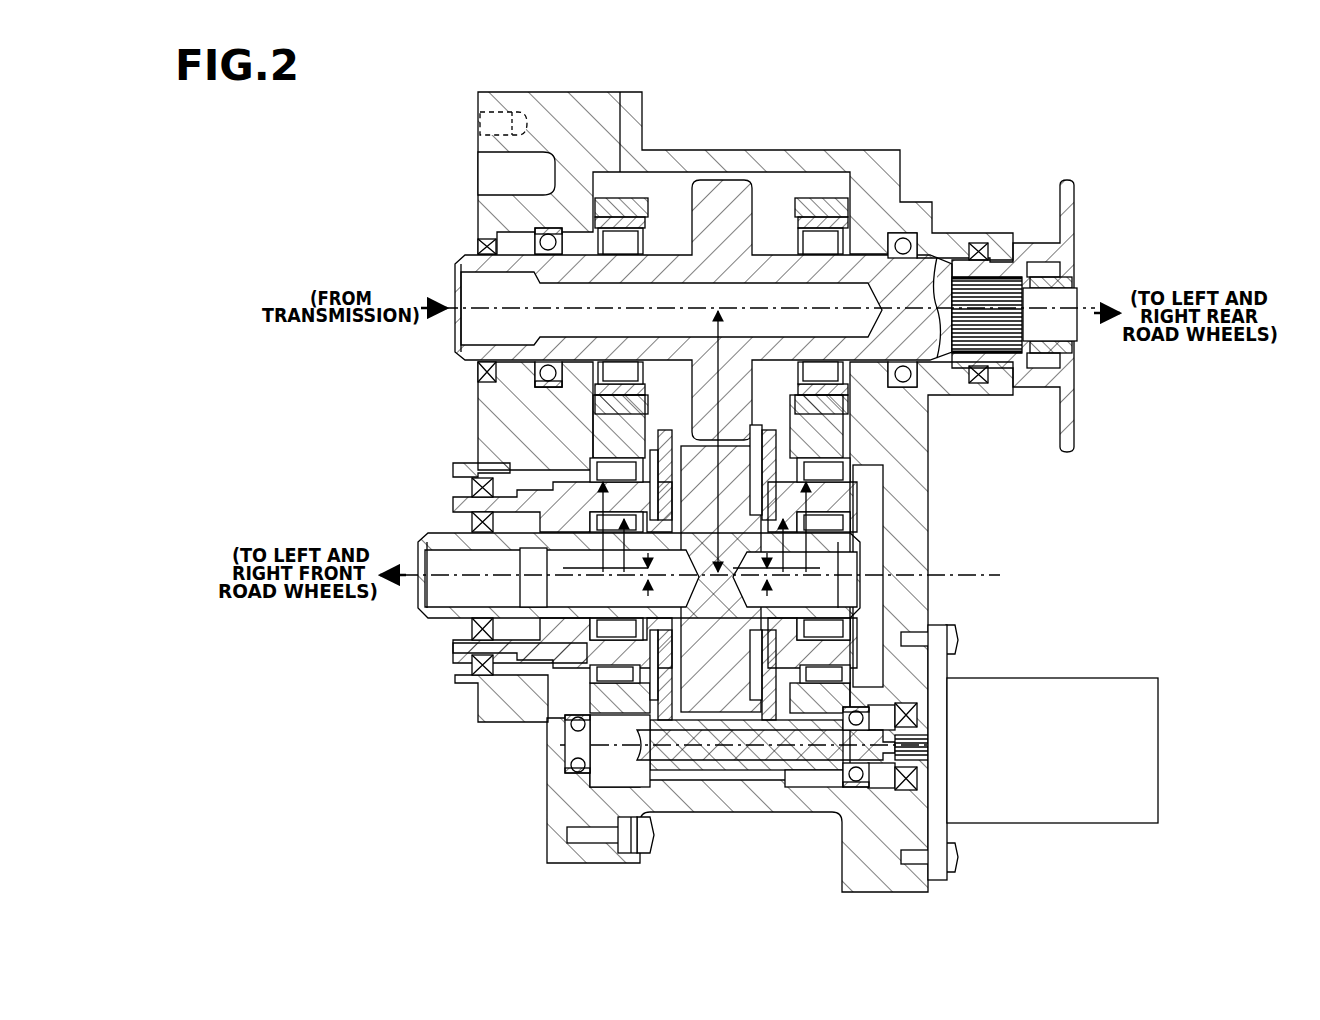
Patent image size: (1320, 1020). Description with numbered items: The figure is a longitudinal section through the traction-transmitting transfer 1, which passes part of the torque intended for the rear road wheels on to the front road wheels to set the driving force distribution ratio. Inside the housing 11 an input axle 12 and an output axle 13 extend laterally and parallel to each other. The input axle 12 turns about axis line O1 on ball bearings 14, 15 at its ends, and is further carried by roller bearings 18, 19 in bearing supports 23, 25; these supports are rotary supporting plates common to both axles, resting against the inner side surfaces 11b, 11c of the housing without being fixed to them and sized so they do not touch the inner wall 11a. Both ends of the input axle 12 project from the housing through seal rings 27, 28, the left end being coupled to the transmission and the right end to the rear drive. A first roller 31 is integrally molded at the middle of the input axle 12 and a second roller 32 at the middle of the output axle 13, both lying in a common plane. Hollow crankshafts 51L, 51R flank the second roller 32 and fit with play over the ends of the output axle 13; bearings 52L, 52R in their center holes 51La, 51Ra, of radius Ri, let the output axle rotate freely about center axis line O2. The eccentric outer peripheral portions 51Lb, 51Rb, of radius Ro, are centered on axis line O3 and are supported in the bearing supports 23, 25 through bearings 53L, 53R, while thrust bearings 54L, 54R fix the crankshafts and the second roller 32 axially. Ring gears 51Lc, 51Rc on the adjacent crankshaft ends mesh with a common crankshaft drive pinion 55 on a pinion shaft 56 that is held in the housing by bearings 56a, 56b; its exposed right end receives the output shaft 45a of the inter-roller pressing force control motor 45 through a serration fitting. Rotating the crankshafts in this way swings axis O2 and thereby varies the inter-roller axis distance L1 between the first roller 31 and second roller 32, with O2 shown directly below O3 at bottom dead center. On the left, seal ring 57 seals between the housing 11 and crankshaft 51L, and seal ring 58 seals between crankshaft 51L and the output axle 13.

The traction-transmitting transfer 1 is at (808, 146).
The housing 11 is at (595, 102).
The inner wall 11a is at (780, 192).
The inner side surface 11b is at (598, 182).
The inner side surface 11c is at (855, 180).
The input axle 12 is at (669, 252).
The output axle 13 is at (442, 615).
The ball bearing 14 is at (538, 236).
The ball bearing 15 is at (906, 236).
The roller bearing 18 is at (608, 245).
The roller bearing 19 is at (822, 245).
The bearing support 23 is at (633, 196).
The bearing support 25 is at (818, 197).
The seal ring 27 is at (478, 247).
The seal ring 28 is at (996, 258).
The first roller 31 is at (727, 170).
The second roller 32 is at (712, 716).
The inter-roller pressing force control motor 45 is at (1090, 678).
The output shaft 45a is at (930, 760).
The crankshaft 51L is at (580, 660).
The center hole 51La is at (547, 646).
The eccentric outer peripheral portion 51Lb is at (590, 462).
The ring gear 51Lc is at (678, 790).
The crankshaft 51R is at (858, 520).
The center hole 51Ra is at (858, 538).
The eccentric outer peripheral portion 51Rb is at (835, 455).
The ring gear 51Rc is at (773, 722).
The bearing 52L is at (597, 677).
The bearing 52R is at (830, 560).
The bearing 53L is at (590, 747).
The bearing 53R is at (872, 672).
The thrust bearing 54L is at (678, 512).
The thrust bearing 54R is at (756, 512).
The crankshaft drive pinion 55 is at (742, 790).
The pinion shaft 56 is at (822, 782).
The bearing 56a is at (578, 778).
The bearing 56b is at (857, 795).
The seal ring 57 is at (472, 486).
The seal ring 58 is at (472, 522).
The axis line O1 is at (748, 306).
The center axis line O2 is at (476, 470).
The center axis line O3 is at (982, 592).
The inter-roller axis distance L1 is at (728, 350).
The radius Ri is at (626, 548).
The radius Ro is at (605, 476).